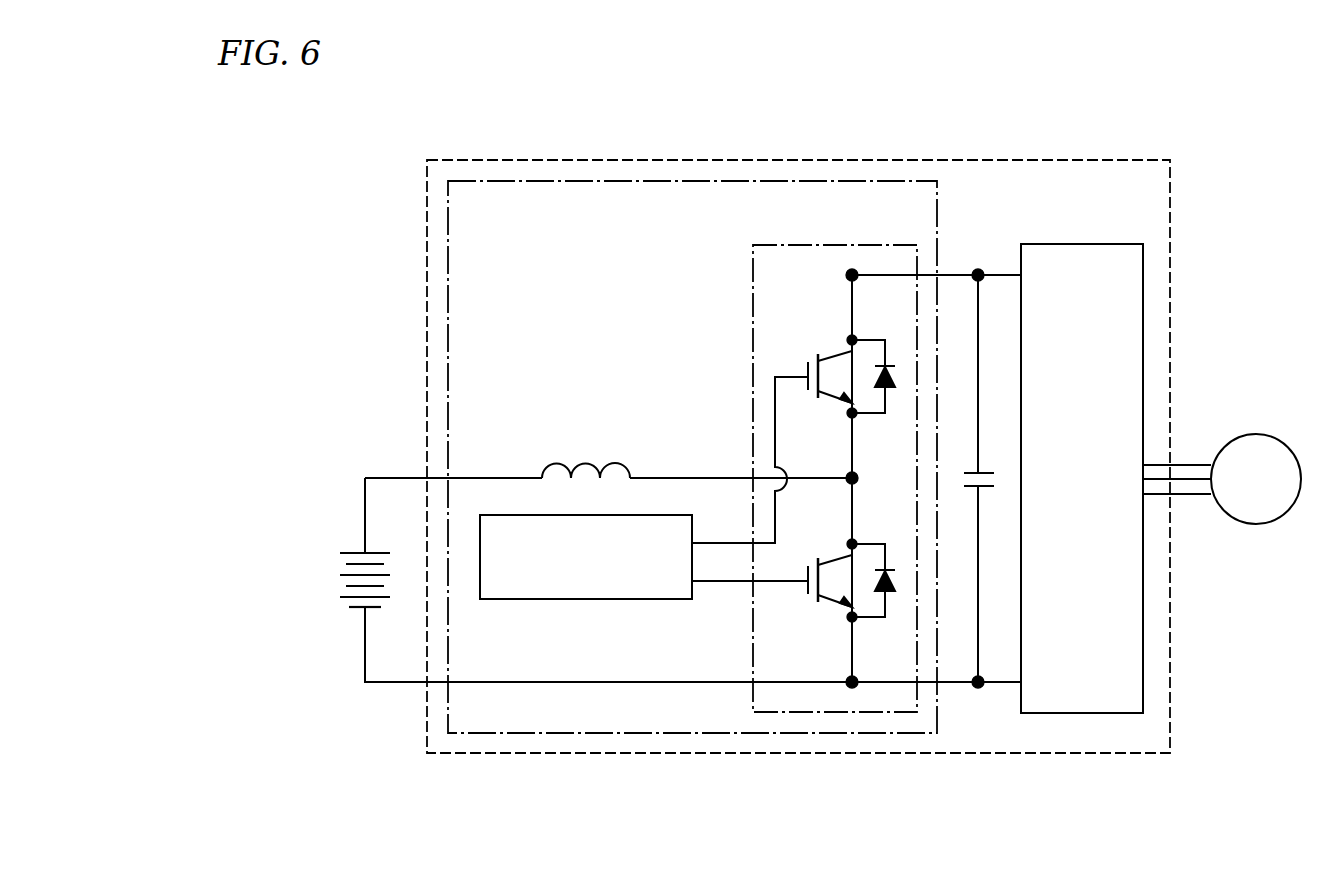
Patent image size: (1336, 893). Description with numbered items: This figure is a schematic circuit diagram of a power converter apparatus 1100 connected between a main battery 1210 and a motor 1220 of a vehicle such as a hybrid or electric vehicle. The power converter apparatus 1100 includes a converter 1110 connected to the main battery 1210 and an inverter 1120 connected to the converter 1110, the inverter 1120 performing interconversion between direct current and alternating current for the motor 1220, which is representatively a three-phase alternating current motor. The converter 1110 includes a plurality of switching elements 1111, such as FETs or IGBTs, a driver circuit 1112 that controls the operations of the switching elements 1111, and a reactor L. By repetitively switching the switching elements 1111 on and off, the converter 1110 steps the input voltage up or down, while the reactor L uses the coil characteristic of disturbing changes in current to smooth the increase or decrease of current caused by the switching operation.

The power converter apparatus 1100 is at (427, 213).
The converter 1110 is at (937, 204).
The switching elements 1111 is at (812, 356).
The driver circuit 1112 is at (518, 600).
The inverter 1120 is at (1117, 244).
The main battery 1210 is at (340, 565).
The motor 1220 is at (1283, 436).
The reactor L is at (612, 463).